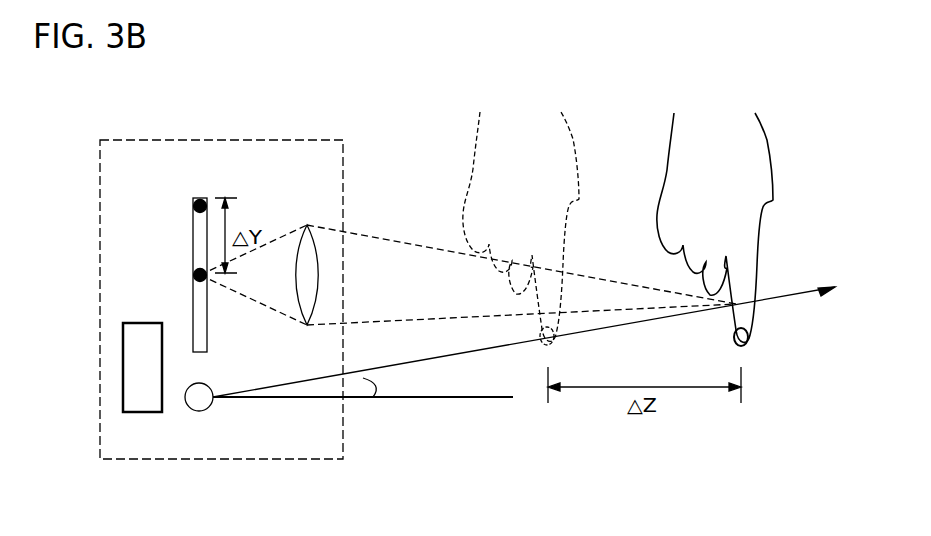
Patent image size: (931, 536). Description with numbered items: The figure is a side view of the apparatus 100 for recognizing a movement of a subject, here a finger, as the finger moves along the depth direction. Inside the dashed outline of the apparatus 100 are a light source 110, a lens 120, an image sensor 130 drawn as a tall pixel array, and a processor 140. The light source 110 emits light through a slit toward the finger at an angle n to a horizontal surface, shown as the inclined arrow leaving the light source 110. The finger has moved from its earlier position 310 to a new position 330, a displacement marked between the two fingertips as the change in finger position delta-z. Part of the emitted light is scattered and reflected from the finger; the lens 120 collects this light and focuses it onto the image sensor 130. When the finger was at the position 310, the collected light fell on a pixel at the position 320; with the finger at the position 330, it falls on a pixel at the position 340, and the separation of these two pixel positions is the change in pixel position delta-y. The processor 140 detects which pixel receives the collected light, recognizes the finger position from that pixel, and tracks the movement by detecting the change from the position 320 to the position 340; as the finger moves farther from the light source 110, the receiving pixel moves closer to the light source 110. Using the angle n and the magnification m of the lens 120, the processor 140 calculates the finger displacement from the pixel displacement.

The apparatus for recognizing a movement of a subject 100 is at (223, 140).
The light source 110 is at (199, 411).
The lens 120 is at (307, 225).
The image sensor 130 is at (193, 240).
The processor 140 is at (142, 323).
The position of the finger 310 is at (555, 337).
The position of a pixel 320 is at (193, 206).
The position of the finger 330 is at (749, 336).
The position of a pixel 340 is at (204, 280).